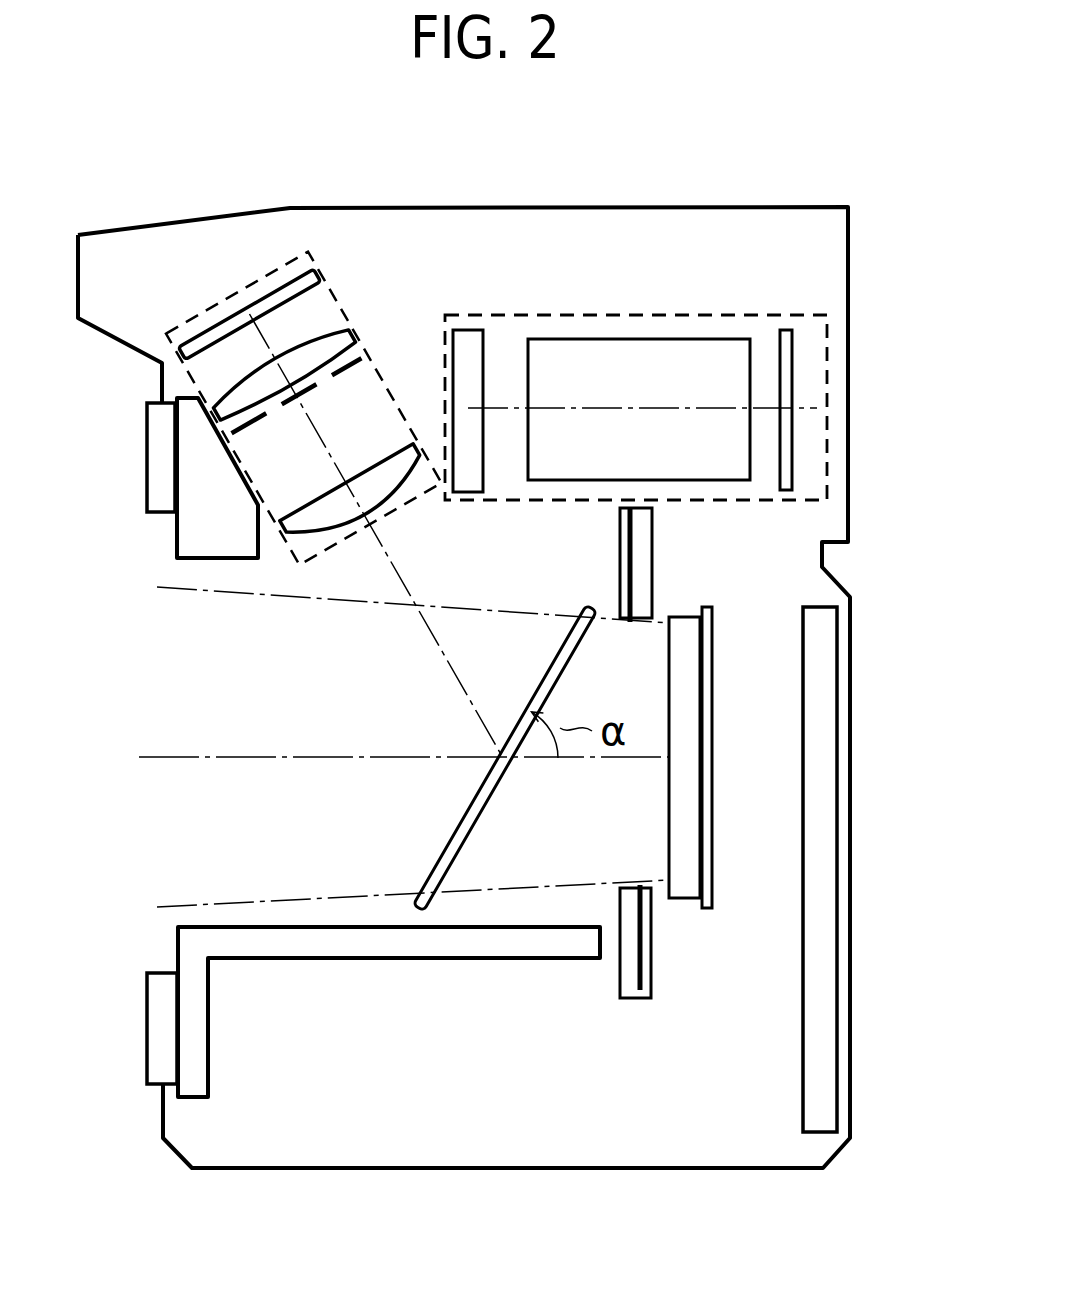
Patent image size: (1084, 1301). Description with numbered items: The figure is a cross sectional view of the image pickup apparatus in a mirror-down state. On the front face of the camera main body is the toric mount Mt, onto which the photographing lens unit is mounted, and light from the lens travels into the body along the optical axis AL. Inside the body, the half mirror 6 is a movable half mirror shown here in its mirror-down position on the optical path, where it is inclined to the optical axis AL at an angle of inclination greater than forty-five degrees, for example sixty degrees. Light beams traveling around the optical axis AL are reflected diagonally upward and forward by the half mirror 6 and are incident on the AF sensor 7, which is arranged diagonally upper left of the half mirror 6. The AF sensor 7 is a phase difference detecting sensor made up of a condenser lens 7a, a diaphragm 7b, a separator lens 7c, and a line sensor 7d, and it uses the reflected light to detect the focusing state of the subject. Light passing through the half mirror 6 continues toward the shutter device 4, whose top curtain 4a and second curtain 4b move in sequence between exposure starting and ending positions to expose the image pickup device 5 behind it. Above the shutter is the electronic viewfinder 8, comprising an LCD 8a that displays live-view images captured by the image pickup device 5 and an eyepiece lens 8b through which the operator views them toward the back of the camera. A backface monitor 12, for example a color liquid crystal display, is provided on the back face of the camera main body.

The shutter device 4 is at (788, 729).
The top curtain 4a is at (642, 955).
The second curtain 4b is at (630, 577).
The image pickup device 5 is at (688, 656).
The half mirror 6 is at (458, 838).
The AF sensor 7 is at (272, 335).
The condenser lens 7a is at (356, 498).
The diaphragm 7b is at (282, 372).
The separator lens 7c is at (297, 395).
The line sensor 7d is at (249, 314).
The electronic viewfinder 8 is at (645, 287).
The LCD 8a is at (472, 330).
The eyepiece lens 8b is at (631, 339).
The backface monitor 12 is at (825, 775).
The toric mount Mt is at (147, 463).
The optical axis AL is at (185, 757).